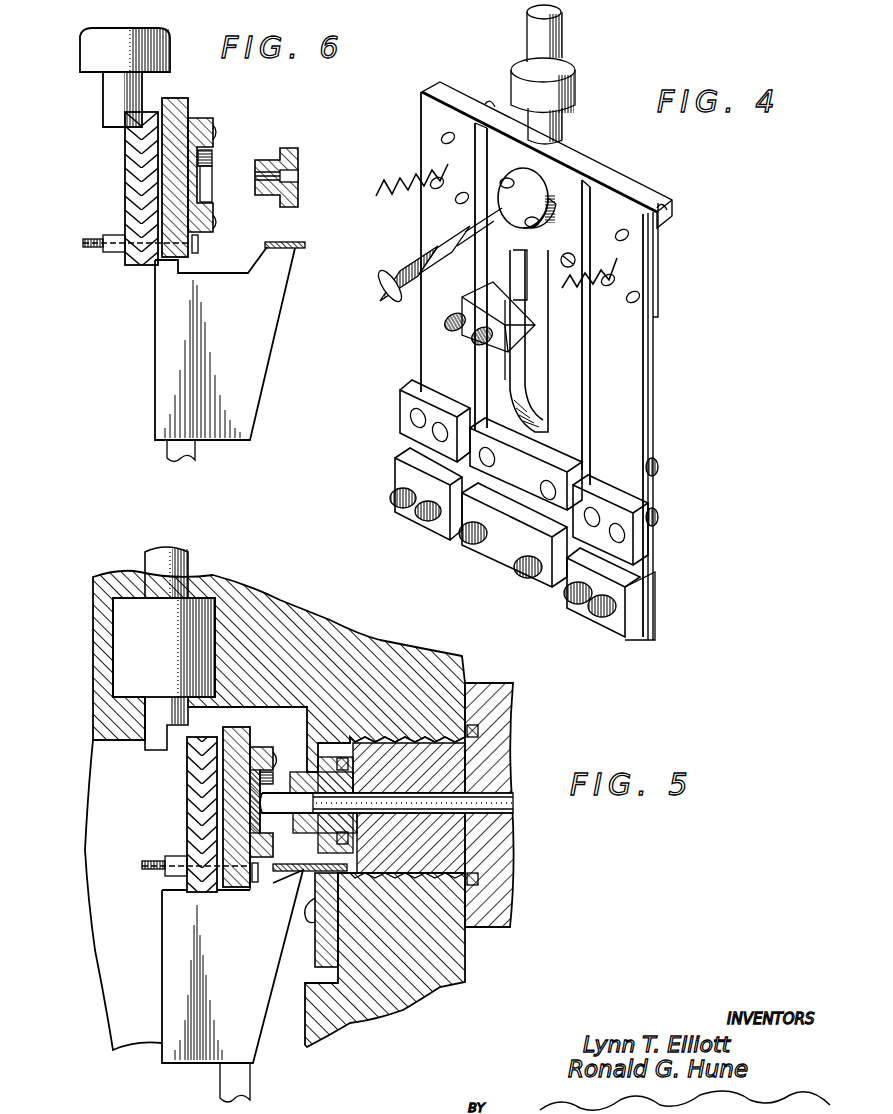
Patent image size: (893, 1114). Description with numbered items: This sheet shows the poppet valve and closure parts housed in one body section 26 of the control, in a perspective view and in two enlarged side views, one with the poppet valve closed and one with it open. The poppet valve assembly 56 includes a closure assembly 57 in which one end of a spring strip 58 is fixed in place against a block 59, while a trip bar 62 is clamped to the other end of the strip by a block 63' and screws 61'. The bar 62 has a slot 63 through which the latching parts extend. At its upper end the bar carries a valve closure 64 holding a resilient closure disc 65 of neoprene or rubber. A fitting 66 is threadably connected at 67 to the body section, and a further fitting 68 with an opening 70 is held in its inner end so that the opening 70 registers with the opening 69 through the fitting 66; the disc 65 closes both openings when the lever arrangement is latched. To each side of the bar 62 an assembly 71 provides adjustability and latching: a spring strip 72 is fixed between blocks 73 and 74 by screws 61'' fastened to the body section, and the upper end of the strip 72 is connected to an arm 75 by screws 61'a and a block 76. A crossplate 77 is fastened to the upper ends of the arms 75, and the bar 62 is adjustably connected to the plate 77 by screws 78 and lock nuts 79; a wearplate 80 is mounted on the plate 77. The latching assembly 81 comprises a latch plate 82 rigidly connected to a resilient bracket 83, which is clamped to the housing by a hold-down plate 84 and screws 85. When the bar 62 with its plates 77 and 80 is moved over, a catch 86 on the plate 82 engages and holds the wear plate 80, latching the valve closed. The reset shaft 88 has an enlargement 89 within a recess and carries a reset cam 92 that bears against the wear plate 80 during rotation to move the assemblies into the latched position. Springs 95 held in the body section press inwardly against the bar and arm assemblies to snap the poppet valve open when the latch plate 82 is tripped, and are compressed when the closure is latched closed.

In FIG. 5, the housing or body section 26 is at (300, 628).
In FIG. 6, the poppet valve assembly 56 is at (222, 186).
In FIG. 5, the poppet valve assembly 56 is at (282, 825).
In FIG. 4, the closure assembly 57 is at (565, 195).
In FIG. 4, the spring strip 58 is at (515, 505).
In FIG. 4, the block 59 is at (490, 555).
In FIG. 4, the screws 61' is at (526, 464).
In FIG. 4, the screws 61'a is at (692, 485).
In FIG. 4, the screws 61'' is at (685, 530).
In FIG. 6, the trip bar 62 is at (175, 100).
In FIG. 4, the trip bar 62 is at (438, 256).
In FIG. 5, the trip bar 62 is at (235, 730).
In FIG. 6, the slot 63 is at (150, 449).
In FIG. 4, the slot 63 is at (566, 341).
In FIG. 5, the slot 63 is at (210, 1082).
In FIG. 4, the block 63' is at (548, 451).
In FIG. 6, the valve closure 64 is at (200, 120).
In FIG. 5, the valve closure 64 is at (262, 748).
In FIG. 6, the resilient closure disc 65 is at (205, 158).
In FIG. 5, the resilient closure disc 65 is at (262, 778).
In FIG. 5, the adapter fitting 66 is at (484, 690).
In FIG. 5, the threaded connection 67 is at (420, 742).
In FIG. 6, the fitting 68 is at (268, 160).
In FIG. 5, the fitting 68 is at (325, 758).
In FIG. 5, the opening 69 is at (485, 805).
In FIG. 6, the opening 70 is at (298, 175).
In FIG. 5, the opening 70 is at (398, 822).
In FIG. 4, the adjustability and latching assembly 71 is at (432, 337).
In FIG. 4, the spring strip 72 is at (405, 440).
In FIG. 4, the block 73 is at (612, 622).
In FIG. 4, the block 74 is at (655, 600).
In FIG. 4, the arm 75 is at (657, 478).
In FIG. 4, the block 76 is at (600, 500).
In FIG. 6, the crossplate 77 is at (140, 266).
In FIG. 4, the crossplate 77 is at (570, 170).
In FIG. 5, the crossplate 77 is at (200, 830).
In FIG. 6, the screws 78 is at (198, 245).
In FIG. 5, the screws 78 is at (258, 878).
In FIG. 6, the lock nuts 79 is at (108, 236).
In FIG. 5, the lock nuts 79 is at (168, 858).
In FIG. 6, the wearplate 80 is at (125, 172).
In FIG. 4, the wearplate 80 is at (630, 185).
In FIG. 5, the wearplate 80 is at (187, 800).
In FIG. 6, the latching assembly 81 is at (155, 365).
In FIG. 4, the latching assembly 81 is at (462, 292).
In FIG. 5, the latching assembly 81 is at (162, 957).
In FIG. 6, the latch plate 82 is at (202, 359).
In FIG. 4, the latch plate 82 is at (531, 279).
In FIG. 5, the latch plate 82 is at (204, 982).
In FIG. 6, the resilient bracket 83 is at (280, 242).
In FIG. 4, the resilient bracket 83 is at (498, 317).
In FIG. 5, the resilient bracket 83 is at (302, 866).
In FIG. 4, the hold-down plate 84 is at (510, 345).
In FIG. 5, the hold-down plate 84 is at (318, 955).
In FIG. 4, the screws 85 is at (455, 330).
In FIG. 5, the screws 85 is at (305, 915).
In FIG. 6, the catch 86 is at (168, 272).
In FIG. 4, the catch 86 is at (535, 275).
In FIG. 5, the catch 86 is at (170, 890).
In FIG. 4, the shaft 88 is at (560, 30).
In FIG. 5, the shaft 88 is at (190, 562).
In FIG. 6, the enlargement 89 is at (125, 50).
In FIG. 4, the enlargement 89 is at (575, 80).
In FIG. 5, the enlargement 89 is at (164, 647).
In FIG. 6, the reset cam 92 is at (104, 100).
In FIG. 4, the reset cam 92 is at (562, 118).
In FIG. 5, the reset cam 92 is at (145, 730).
In FIG. 4, the springs 95 is at (610, 285).